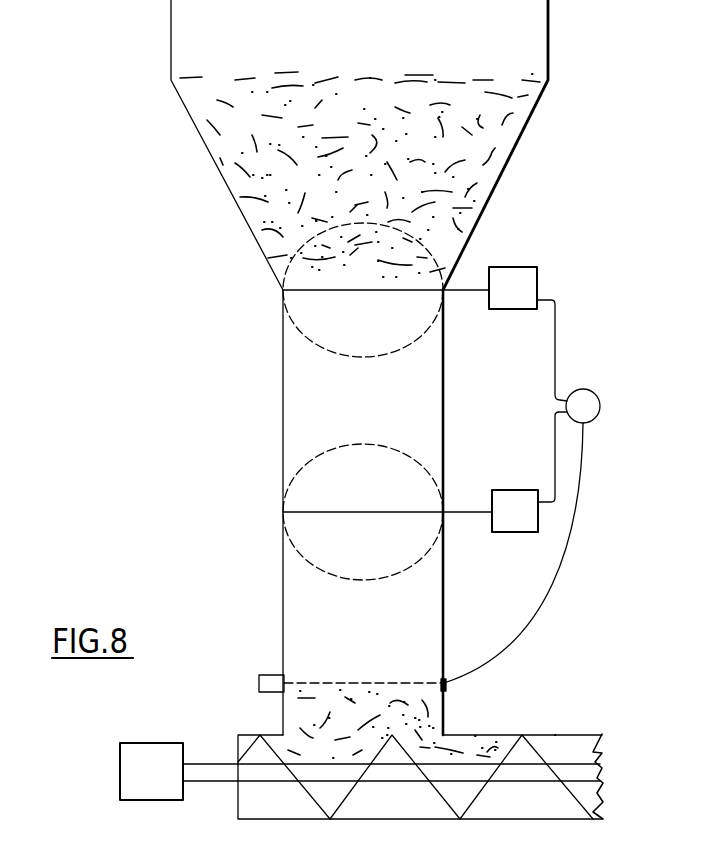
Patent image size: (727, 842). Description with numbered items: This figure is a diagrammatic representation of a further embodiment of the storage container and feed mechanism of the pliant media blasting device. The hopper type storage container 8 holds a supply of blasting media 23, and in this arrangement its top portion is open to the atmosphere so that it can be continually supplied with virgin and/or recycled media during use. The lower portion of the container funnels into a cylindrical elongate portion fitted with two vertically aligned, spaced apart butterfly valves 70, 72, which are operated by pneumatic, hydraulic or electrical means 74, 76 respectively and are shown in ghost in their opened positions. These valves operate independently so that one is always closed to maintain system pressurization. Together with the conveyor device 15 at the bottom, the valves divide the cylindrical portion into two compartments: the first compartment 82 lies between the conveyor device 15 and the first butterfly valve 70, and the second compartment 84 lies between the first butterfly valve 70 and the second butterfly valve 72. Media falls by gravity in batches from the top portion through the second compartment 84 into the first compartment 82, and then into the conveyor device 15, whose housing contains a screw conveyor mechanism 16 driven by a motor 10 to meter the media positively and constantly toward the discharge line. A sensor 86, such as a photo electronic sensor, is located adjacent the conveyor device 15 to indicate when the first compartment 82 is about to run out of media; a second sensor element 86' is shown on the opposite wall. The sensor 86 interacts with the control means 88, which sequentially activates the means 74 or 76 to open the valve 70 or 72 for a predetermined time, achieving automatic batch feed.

The storage container 8 is at (512, 152).
The blasting media 23 is at (371, 103).
The second butterfly valve 72 is at (298, 285).
The first butterfly valve 70 is at (300, 510).
The second compartment 84 is at (373, 403).
The first compartment 82 is at (373, 610).
The valve operating means 76 is at (526, 300).
The valve operating means 74 is at (528, 522).
The control means 88 is at (585, 389).
The sensor 86 is at (312, 673).
The low level sensor 86' is at (411, 672).
The conveyor device 15 is at (478, 733).
The screw conveyor mechanism 16 is at (600, 748).
The motor 10 is at (165, 783).